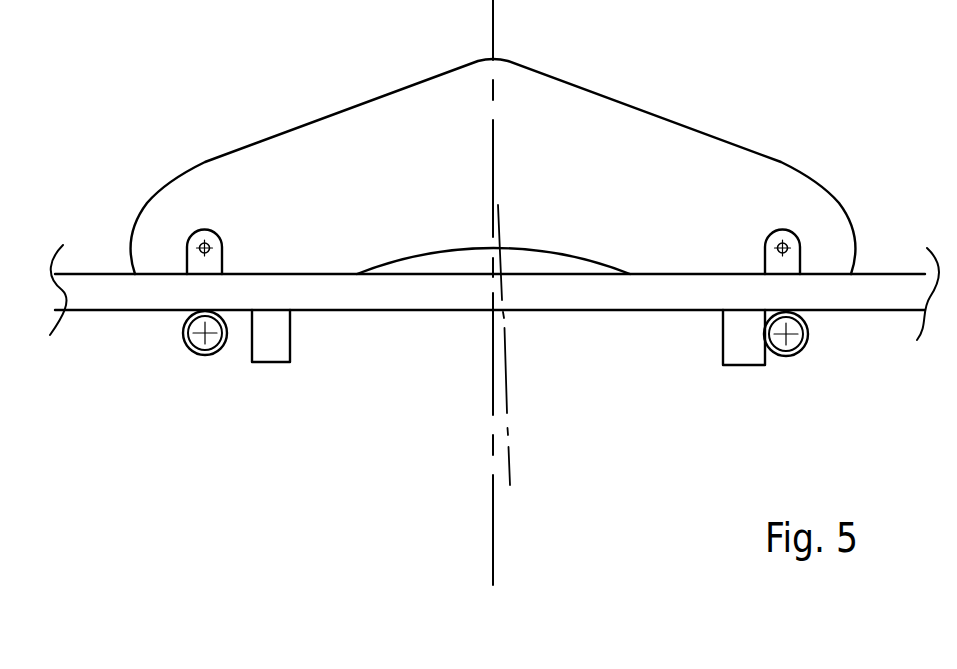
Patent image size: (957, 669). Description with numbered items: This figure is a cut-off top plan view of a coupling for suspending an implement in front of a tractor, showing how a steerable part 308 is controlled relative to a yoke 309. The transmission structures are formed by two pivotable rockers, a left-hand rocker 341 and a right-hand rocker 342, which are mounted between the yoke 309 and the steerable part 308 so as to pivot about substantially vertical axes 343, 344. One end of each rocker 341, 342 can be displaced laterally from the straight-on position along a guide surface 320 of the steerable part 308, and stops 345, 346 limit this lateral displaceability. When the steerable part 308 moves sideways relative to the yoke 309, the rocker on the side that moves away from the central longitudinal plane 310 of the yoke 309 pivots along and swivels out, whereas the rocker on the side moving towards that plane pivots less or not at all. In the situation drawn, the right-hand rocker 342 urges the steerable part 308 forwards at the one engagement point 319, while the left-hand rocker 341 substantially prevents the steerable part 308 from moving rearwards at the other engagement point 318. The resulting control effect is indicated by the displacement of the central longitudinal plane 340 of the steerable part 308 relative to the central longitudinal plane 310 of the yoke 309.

The steerable part 308 is at (582, 312).
The yoke 309 is at (652, 113).
The central longitudinal plane of the yoke 310 is at (494, 123).
The engagement point 318 is at (203, 310).
The engagement point 319 is at (787, 312).
The guide surface 320 is at (418, 312).
The central longitudinal plane of the steerable part 340 is at (507, 413).
The rocker 341 is at (223, 263).
The rocker 342 is at (802, 258).
The vertical axis 343 is at (215, 234).
The vertical axis 344 is at (776, 244).
The stop 345 is at (250, 348).
The stop 346 is at (766, 364).